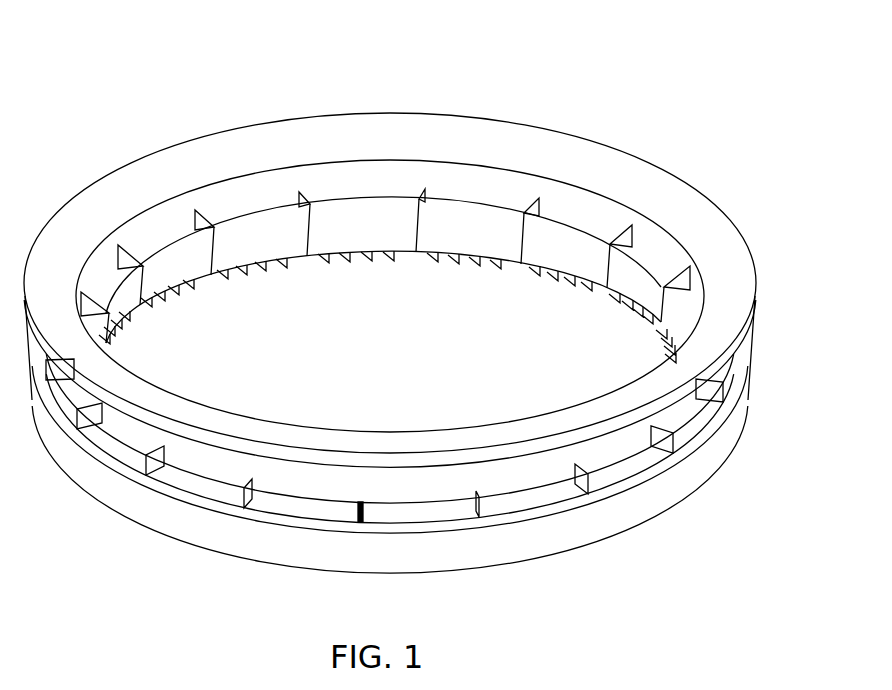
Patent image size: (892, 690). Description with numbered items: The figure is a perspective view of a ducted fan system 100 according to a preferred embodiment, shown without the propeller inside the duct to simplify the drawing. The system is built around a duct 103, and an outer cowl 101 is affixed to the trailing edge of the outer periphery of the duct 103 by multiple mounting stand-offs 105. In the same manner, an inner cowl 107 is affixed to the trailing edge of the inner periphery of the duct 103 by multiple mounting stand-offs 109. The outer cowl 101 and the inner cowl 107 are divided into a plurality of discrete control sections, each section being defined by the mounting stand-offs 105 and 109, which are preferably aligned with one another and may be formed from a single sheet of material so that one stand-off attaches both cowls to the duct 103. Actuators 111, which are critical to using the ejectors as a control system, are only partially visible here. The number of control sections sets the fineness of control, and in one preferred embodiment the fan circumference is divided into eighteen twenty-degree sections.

The ducted fan system 100 is at (645, 110).
The outer cowl 101 is at (590, 524).
The duct 103 is at (300, 132).
The mounting stand-offs 105 is at (660, 452).
The inner cowl 107 is at (357, 226).
The mounting stand-offs 109 is at (602, 235).
The actuators 111 is at (323, 262).